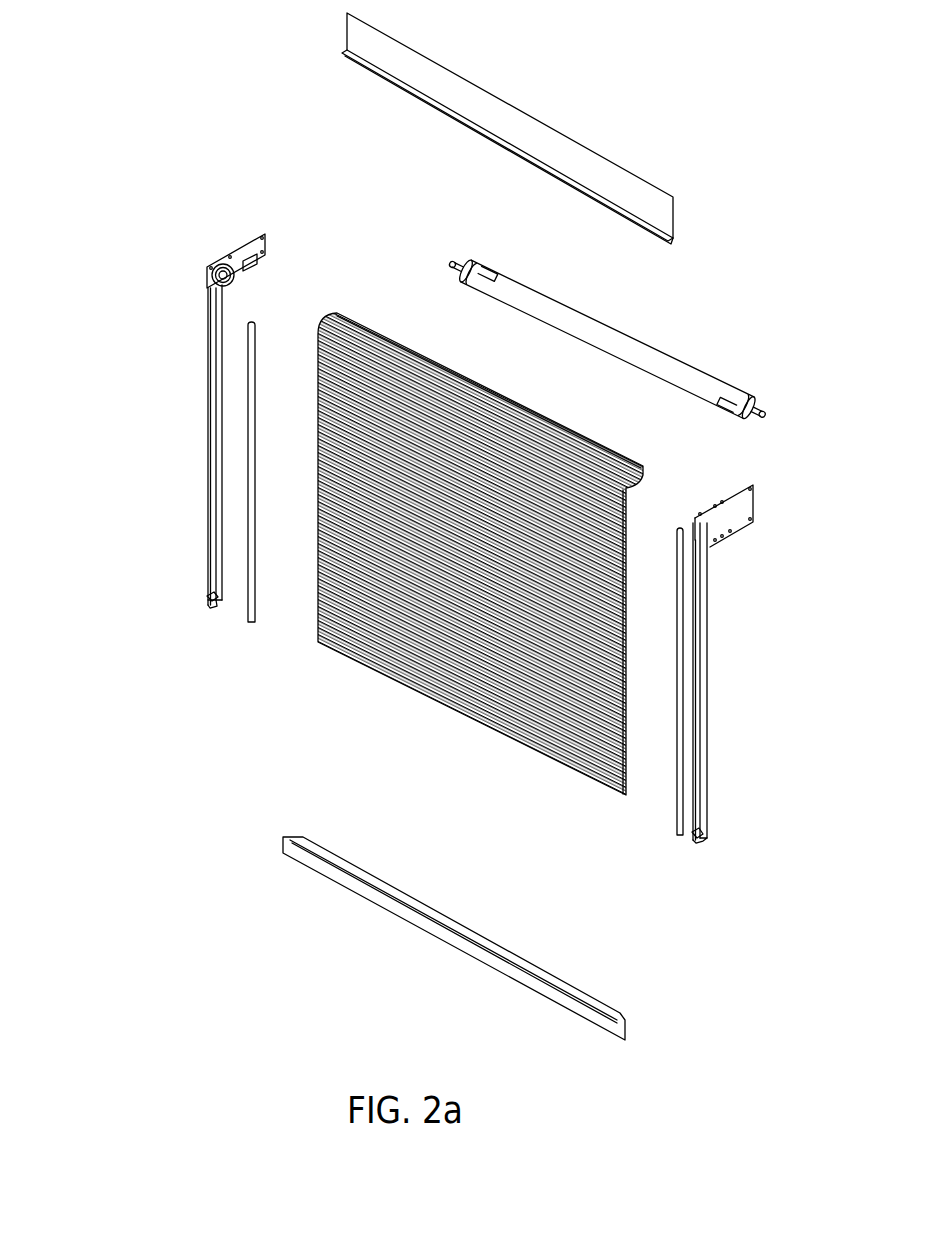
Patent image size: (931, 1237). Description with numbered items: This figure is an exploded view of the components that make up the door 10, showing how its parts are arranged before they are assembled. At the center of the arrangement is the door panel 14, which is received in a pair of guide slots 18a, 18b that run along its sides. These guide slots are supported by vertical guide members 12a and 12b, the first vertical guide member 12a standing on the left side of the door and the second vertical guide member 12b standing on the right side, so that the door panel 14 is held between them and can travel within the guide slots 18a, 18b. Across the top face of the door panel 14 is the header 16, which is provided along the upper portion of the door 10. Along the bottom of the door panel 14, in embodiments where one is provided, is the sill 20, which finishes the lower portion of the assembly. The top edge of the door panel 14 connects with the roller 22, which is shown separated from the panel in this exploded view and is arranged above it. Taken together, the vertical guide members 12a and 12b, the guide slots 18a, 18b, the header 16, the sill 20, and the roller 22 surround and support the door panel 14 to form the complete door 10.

The door 10 is at (95, 237).
The vertical guide member 12a is at (207, 393).
The vertical guide member 12b is at (707, 588).
The door panel 14 is at (370, 652).
The header 16 is at (563, 135).
The guide slot 18a is at (254, 326).
The guide slot 18b is at (676, 527).
The sill 20 is at (487, 937).
The roller 22 is at (687, 365).